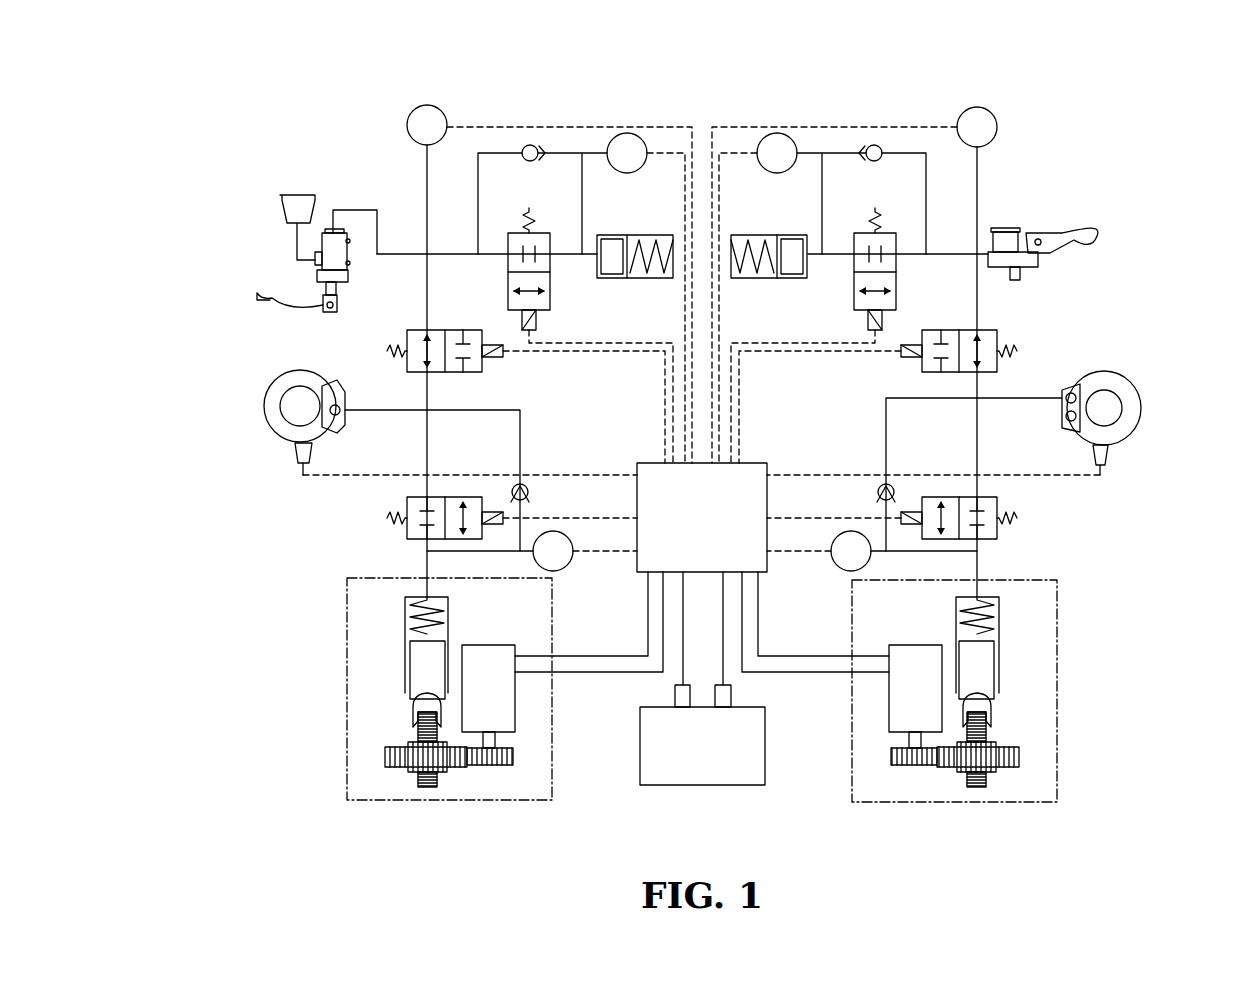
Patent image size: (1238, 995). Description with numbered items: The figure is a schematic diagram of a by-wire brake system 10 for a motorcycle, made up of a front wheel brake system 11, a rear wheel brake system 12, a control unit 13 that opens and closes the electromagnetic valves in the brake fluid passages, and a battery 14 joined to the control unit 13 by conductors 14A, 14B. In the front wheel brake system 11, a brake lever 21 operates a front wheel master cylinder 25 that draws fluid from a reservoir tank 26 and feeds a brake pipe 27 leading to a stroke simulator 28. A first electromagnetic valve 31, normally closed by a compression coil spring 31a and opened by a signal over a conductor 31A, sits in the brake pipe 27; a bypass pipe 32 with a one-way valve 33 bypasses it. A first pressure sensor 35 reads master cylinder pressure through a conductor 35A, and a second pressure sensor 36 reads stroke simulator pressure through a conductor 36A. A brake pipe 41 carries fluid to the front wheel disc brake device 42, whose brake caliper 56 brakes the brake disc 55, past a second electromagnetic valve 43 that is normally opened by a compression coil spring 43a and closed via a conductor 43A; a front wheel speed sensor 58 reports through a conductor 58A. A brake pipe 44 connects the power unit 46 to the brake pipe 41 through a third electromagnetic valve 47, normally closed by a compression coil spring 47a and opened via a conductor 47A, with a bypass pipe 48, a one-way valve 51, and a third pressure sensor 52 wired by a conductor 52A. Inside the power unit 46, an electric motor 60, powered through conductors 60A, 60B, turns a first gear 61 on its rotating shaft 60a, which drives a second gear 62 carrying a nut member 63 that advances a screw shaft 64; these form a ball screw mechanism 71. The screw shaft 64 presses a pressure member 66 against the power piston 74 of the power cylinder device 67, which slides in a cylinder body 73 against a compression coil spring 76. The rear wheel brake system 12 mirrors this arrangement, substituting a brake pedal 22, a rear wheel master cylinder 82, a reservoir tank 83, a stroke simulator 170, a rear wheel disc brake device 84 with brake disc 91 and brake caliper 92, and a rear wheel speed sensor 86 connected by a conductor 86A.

The brake system 10 is at (238, 98).
The front wheel brake system 11 is at (1155, 283).
The rear wheel brake system 12 is at (213, 350).
The control unit 13 is at (652, 470).
The battery 14 is at (703, 786).
The conductor 14A is at (683, 672).
The conductor 14B is at (723, 672).
The brake lever 21 is at (1072, 230).
The brake pedal 22 is at (258, 294).
The front wheel master cylinder 25 is at (1018, 280).
The reservoir tank 26 is at (1005, 228).
The brake pipe 27 is at (447, 252).
The stroke simulator 28 is at (760, 235).
The first electromagnetic valve 31 is at (508, 290).
The compression coil spring 31a is at (530, 206).
The conductor 31A is at (618, 340).
The bypass pipe 32 is at (480, 150).
The one-way valve 33 is at (527, 145).
The first pressure sensor 35 is at (418, 106).
The conductor 35A is at (577, 125).
The second pressure sensor 36 is at (626, 133).
The conductor 36A is at (683, 135).
The brake pipe 41 is at (422, 303).
The front wheel disc brake device 42 is at (1145, 385).
The second electromagnetic valve 43 is at (470, 372).
The compression coil spring 43a is at (388, 350).
The conductor 43A is at (632, 353).
The brake pipe 44 is at (420, 485).
The power unit 46 is at (347, 600).
The third electromagnetic valve 47 is at (407, 539).
The compression coil spring 47a is at (388, 516).
The conductor 47A is at (620, 518).
The bypass pipe 48 is at (520, 412).
The one-way valve 51 is at (528, 492).
The third pressure sensor 52 is at (558, 570).
The conductor 52A is at (596, 553).
The brake disc 55 is at (1140, 418).
The brake caliper 56 is at (1065, 415).
The front wheel speed sensor 58 is at (1110, 454).
The conductor 58A is at (1095, 477).
The electric motor 60 is at (488, 645).
The rotating shaft 60a is at (505, 762).
The conductor 60A is at (598, 673).
The conductor 60B is at (600, 656).
The first gear 61 is at (490, 767).
The second gear 62 is at (390, 760).
The nut member 63 is at (420, 722).
The screw shaft 64 is at (427, 790).
The pressure member 66 is at (425, 700).
The power cylinder device 67 is at (398, 652).
The ball screw mechanism 71 is at (401, 781).
The cylinder body 73 is at (405, 640).
The power piston 74 is at (435, 675).
The compression coil spring 76 is at (405, 600).
The rear wheel master cylinder 82 is at (347, 260).
The reservoir tank 83 is at (297, 193).
The rear wheel disc brake device 84 is at (250, 388).
The rear wheel speed sensor 86 is at (292, 452).
The conductor 86A is at (318, 475).
The brake disc 91 is at (265, 410).
The brake caliper 92 is at (345, 395).
The stroke simulator 170 is at (640, 235).